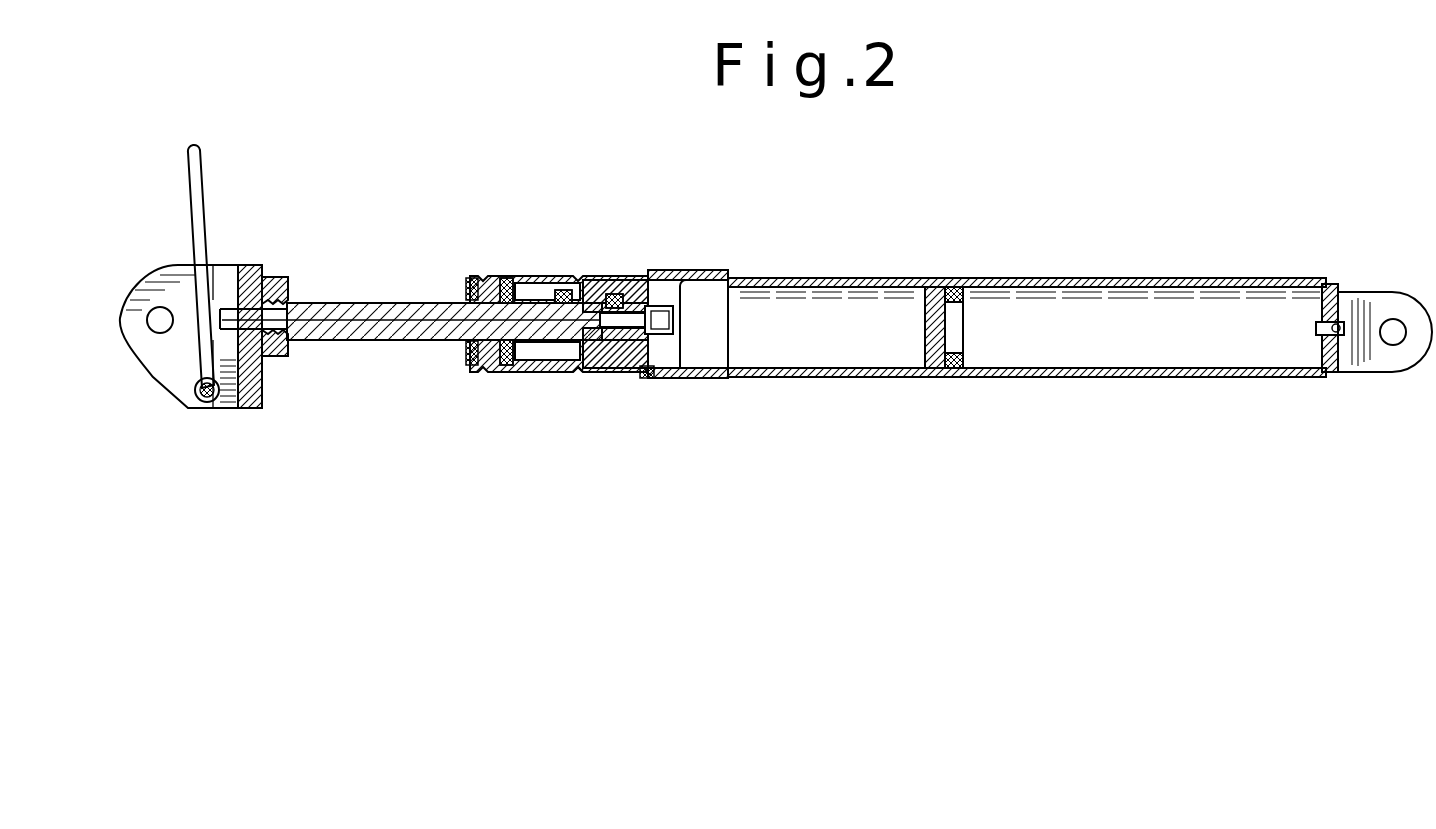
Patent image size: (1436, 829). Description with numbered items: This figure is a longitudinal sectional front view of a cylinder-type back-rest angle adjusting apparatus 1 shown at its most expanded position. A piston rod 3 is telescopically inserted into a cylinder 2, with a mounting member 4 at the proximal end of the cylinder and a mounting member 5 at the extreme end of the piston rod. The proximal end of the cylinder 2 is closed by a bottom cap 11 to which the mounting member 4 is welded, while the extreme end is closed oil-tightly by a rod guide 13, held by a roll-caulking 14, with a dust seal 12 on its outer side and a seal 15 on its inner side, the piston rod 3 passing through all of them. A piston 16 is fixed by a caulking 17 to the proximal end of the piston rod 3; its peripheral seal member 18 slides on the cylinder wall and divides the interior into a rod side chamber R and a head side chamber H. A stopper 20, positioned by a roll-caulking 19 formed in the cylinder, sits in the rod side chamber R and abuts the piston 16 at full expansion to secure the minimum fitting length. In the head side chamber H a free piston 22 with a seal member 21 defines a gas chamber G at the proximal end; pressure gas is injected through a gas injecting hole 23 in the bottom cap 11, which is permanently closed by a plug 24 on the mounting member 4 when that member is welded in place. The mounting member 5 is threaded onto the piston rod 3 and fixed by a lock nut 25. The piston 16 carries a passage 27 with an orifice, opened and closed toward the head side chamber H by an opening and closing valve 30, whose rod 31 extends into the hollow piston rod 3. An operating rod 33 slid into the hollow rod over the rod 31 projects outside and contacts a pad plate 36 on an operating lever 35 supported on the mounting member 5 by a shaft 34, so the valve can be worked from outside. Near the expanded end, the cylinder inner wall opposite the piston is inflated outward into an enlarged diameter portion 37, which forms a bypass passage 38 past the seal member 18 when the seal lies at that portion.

The back-rest angle adjusting apparatus 1 is at (1210, 272).
The cylinder 2 is at (1123, 378).
The piston rod 3 is at (408, 345).
The mounting member 4 is at (1398, 362).
The mounting member 5 is at (167, 350).
The bottom cap 11 is at (1332, 382).
The dust seal 12 is at (467, 297).
The rod guide 13 is at (485, 372).
The roll-caulking 14 is at (486, 276).
The seal 15 is at (504, 286).
The piston 16 is at (629, 280).
The caulking 17 is at (556, 290).
The seal member 18 is at (658, 278).
The roll-caulking 19 is at (580, 374).
The stopper 20 is at (612, 368).
The seal member 21 is at (951, 284).
The free piston 22 is at (930, 372).
The gas injecting hole 23 is at (1346, 324).
The plug 24 is at (1318, 328).
The lock nut 25 is at (277, 360).
The passage 27 is at (620, 296).
The opening and closing valve 30 is at (677, 328).
The rod 31 is at (562, 316).
The operating rod 33 is at (328, 316).
The shaft 34 is at (207, 407).
The operating lever 35 is at (187, 176).
The pad plate 36 is at (218, 295).
The enlarged diameter portion 37 is at (703, 380).
The bypass passage 38 is at (648, 378).
The head side chamber H is at (815, 308).
The gas chamber G is at (1108, 317).
The rod side chamber R is at (548, 357).